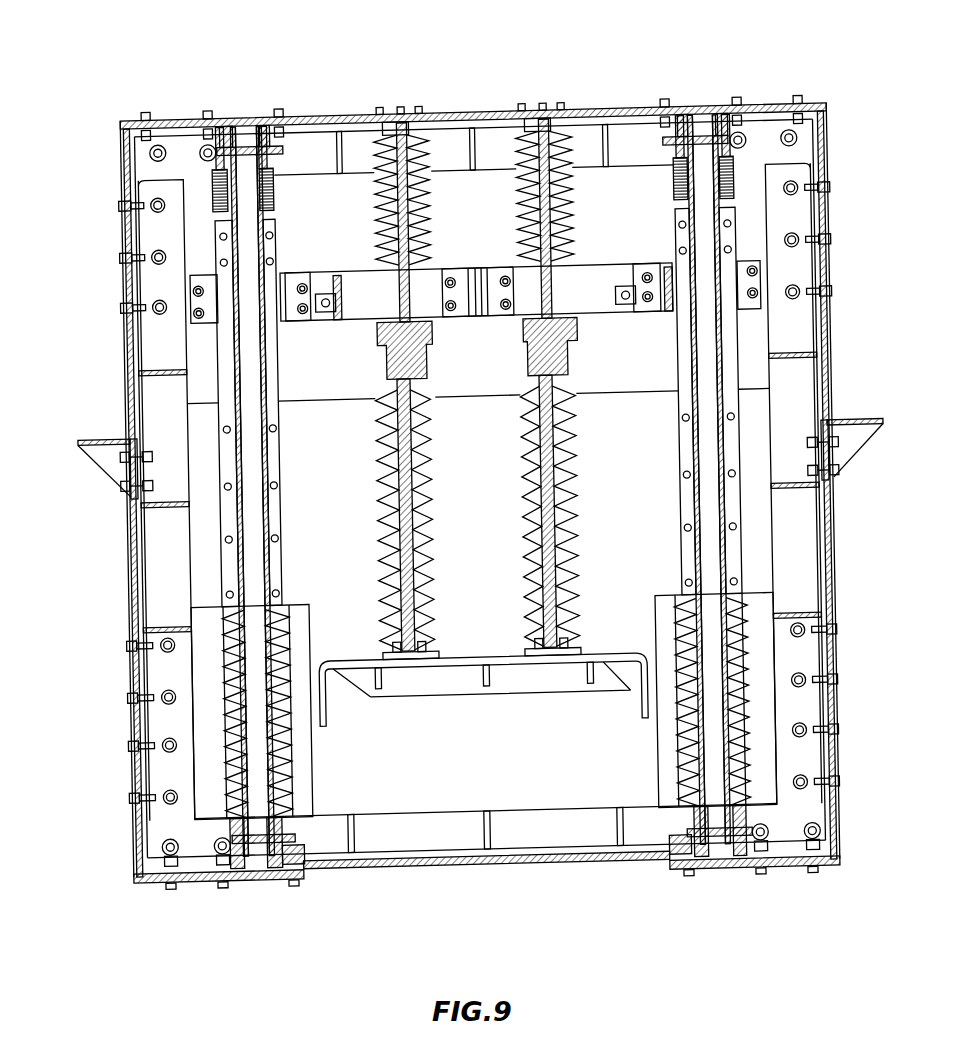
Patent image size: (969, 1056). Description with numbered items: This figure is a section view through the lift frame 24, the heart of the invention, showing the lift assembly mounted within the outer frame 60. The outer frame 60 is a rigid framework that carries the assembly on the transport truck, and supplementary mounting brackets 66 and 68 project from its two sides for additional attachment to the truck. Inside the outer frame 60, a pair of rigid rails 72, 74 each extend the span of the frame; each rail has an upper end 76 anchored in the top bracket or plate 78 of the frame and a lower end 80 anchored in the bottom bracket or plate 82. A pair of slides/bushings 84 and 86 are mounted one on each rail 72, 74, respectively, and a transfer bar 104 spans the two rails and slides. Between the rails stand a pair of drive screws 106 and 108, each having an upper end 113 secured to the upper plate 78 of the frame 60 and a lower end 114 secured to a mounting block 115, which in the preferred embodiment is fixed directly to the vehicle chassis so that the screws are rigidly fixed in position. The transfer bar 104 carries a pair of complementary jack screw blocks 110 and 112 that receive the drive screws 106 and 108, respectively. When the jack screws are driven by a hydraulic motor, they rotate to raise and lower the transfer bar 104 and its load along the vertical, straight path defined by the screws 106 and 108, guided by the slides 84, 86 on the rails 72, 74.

The lift frame 24 is at (589, 877).
The outer frame 60 is at (120, 154).
The supplementary mounting bracket 66 is at (112, 466).
The supplementary mounting bracket 68 is at (868, 421).
The rigid rail 72 is at (247, 233).
The rigid rail 74 is at (700, 203).
The upper end 76 is at (250, 122).
The top bracket or plate 78 is at (345, 118).
The lower end 80 is at (250, 878).
The bottom bracket or plate 82 is at (452, 866).
The slide/bushing 84 is at (272, 383).
The slide/bushing 86 is at (682, 352).
The transfer bar 104 is at (430, 277).
The drive screw 106 is at (437, 456).
The drive screw 108 is at (527, 508).
The jack screw block 110 is at (428, 352).
The jack screw block 112 is at (532, 362).
The upper end 113 is at (420, 122).
The lower end 114 is at (413, 668).
The mounting block 115 is at (365, 690).